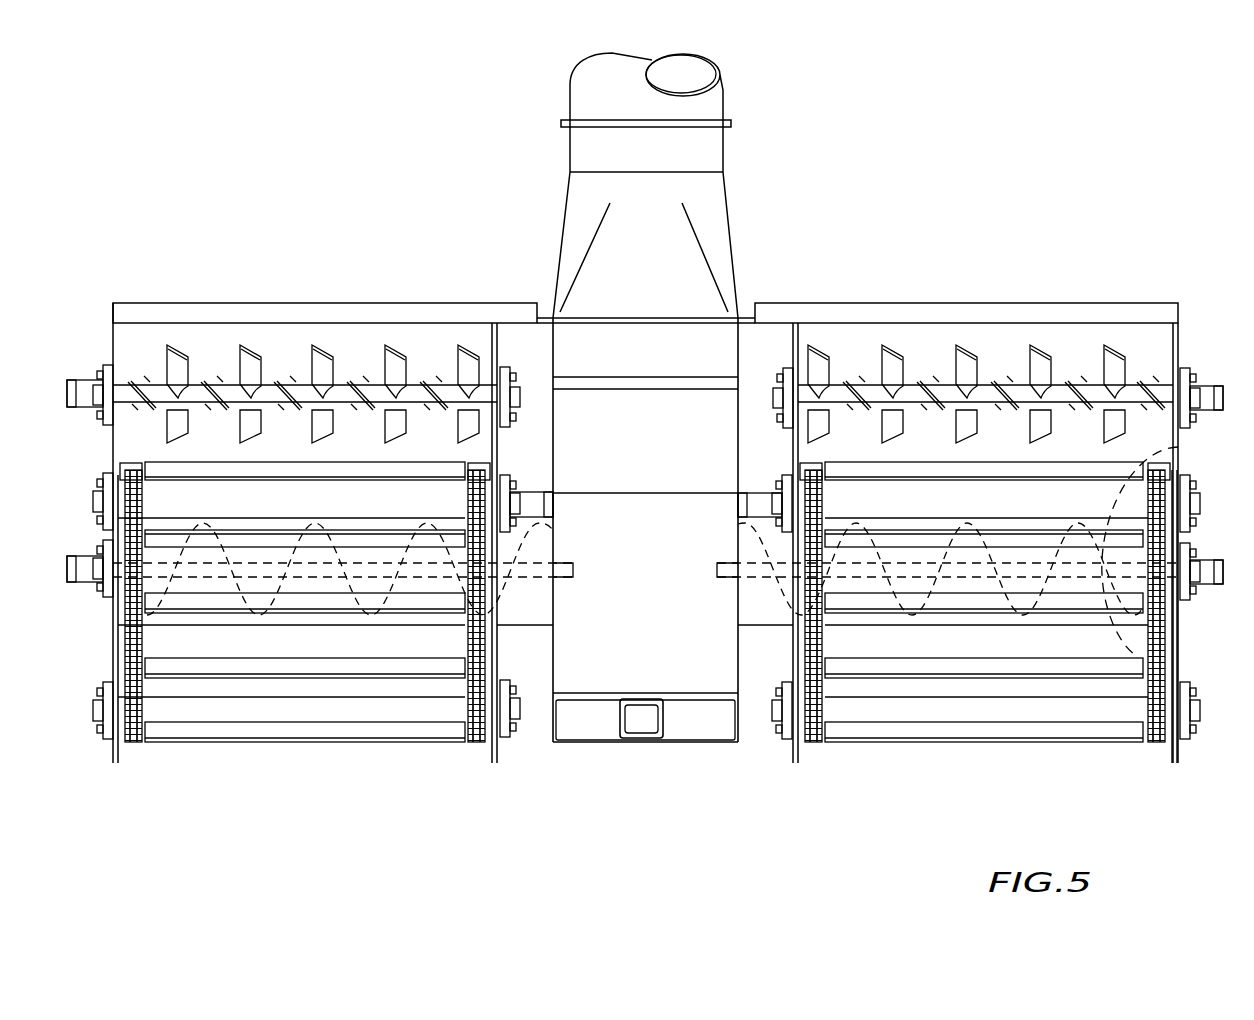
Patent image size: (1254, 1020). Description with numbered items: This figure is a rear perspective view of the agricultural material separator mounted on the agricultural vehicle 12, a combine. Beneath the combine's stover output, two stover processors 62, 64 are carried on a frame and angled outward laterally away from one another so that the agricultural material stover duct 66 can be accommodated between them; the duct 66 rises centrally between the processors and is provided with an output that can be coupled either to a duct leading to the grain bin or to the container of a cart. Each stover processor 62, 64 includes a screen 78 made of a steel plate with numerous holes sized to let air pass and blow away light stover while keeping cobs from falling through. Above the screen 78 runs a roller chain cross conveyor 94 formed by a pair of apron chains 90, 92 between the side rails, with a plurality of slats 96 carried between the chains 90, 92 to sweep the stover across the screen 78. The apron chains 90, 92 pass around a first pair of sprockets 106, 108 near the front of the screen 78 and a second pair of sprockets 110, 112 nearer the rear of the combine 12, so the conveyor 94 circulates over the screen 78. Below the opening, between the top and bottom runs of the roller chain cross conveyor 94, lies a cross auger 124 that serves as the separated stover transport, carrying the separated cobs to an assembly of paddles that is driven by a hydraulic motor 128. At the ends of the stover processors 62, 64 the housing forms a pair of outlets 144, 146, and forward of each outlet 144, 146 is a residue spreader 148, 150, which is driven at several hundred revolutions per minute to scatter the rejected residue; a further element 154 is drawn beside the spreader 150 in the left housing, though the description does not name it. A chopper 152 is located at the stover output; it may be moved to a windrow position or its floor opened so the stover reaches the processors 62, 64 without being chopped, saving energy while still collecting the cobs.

The agricultural vehicle 12 is at (880, 205).
The agricultural material stover duct 66 is at (713, 228).
The second pair of sprockets (first of pair) 110 is at (793, 470).
The outlet 146 is at (212, 337).
The residue spreader 150 is at (388, 310).
The left paddle shaft 154 is at (250, 347).
The outlet 144 is at (1083, 337).
The residue spreader 148 is at (1110, 317).
The chopper 152 is at (826, 355).
The stover processor 64 is at (357, 742).
The screen 78 is at (1023, 643).
The slats 96 is at (1103, 668).
The roller chain cross conveyor 94 is at (927, 670).
The stover processor 62 is at (1035, 765).
The apron chain 90 is at (818, 745).
The apron chain 92 is at (1148, 743).
The first pair of sprockets (first of pair) 106 is at (802, 710).
The first pair of sprockets (second of pair) 108 is at (1186, 725).
The hydraulic motor 128 is at (1208, 574).
The second pair of sprockets (second of pair) 112 is at (1172, 497).
The cross auger 124 is at (1178, 447).